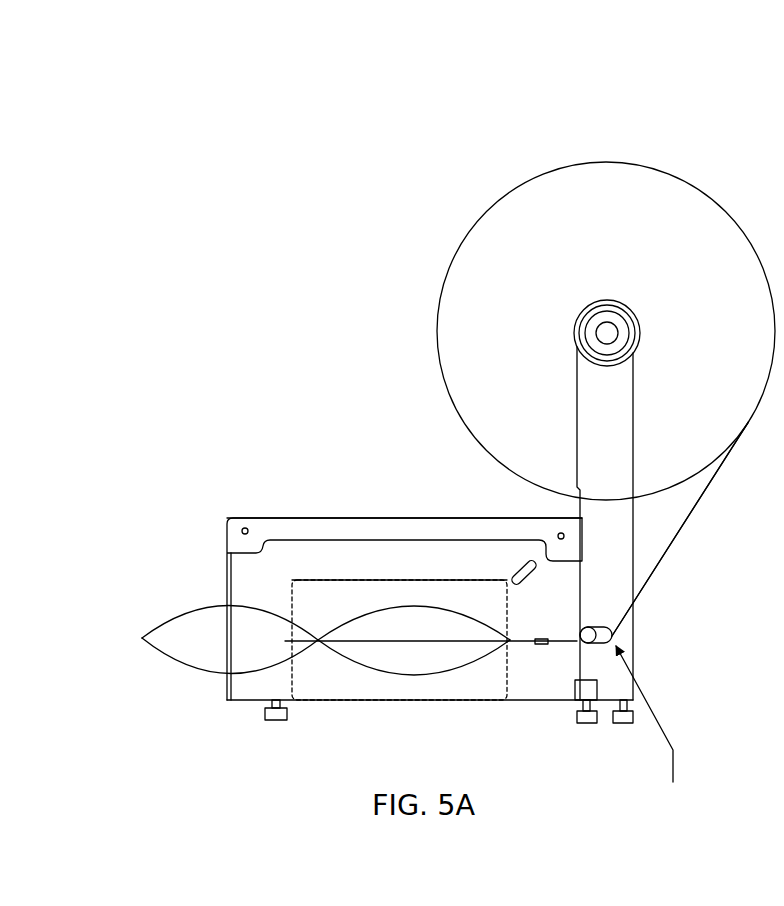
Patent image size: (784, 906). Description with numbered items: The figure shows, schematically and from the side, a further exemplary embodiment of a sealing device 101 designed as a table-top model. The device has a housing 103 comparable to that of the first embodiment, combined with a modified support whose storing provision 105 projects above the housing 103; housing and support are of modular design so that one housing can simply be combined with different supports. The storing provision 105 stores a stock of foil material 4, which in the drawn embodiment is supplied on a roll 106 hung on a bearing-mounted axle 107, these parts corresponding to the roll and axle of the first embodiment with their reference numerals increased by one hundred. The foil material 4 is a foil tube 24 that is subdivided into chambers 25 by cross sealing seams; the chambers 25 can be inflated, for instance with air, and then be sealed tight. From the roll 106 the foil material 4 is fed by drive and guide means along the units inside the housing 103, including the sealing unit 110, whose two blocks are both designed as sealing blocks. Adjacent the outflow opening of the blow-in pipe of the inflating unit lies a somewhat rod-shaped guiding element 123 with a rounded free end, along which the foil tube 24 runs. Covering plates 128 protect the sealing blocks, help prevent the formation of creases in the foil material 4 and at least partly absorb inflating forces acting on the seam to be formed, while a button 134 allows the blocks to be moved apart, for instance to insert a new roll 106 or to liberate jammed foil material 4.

The sealing device 101 is at (262, 275).
The housing 103 is at (282, 555).
The storing provision 105 is at (677, 600).
The roll 106 is at (612, 182).
The bearing-mounted axle 107 is at (608, 330).
The sealing unit 110 is at (368, 582).
The guiding element 123 is at (543, 648).
The covering plates 128 is at (333, 610).
The button 134 is at (517, 560).
The foil material 4 is at (665, 542).
The foil tube 24 is at (685, 529).
The chambers 25 is at (180, 640).